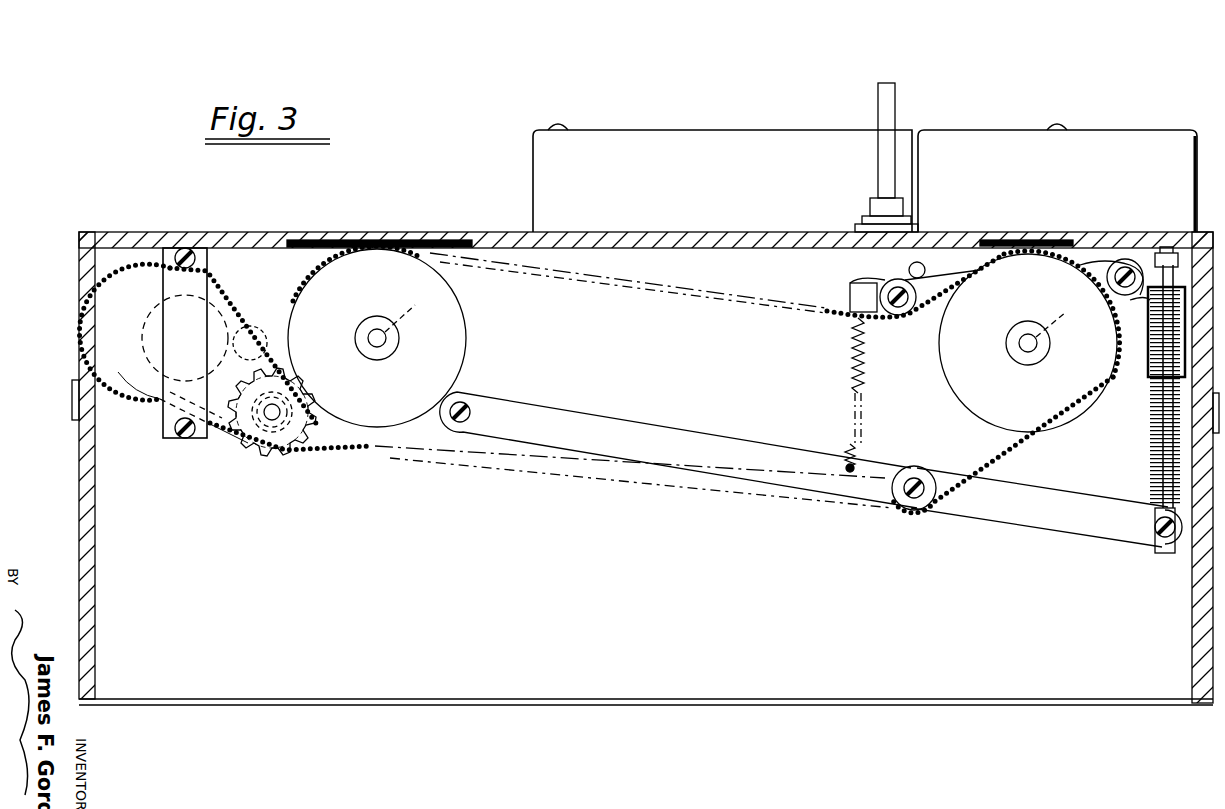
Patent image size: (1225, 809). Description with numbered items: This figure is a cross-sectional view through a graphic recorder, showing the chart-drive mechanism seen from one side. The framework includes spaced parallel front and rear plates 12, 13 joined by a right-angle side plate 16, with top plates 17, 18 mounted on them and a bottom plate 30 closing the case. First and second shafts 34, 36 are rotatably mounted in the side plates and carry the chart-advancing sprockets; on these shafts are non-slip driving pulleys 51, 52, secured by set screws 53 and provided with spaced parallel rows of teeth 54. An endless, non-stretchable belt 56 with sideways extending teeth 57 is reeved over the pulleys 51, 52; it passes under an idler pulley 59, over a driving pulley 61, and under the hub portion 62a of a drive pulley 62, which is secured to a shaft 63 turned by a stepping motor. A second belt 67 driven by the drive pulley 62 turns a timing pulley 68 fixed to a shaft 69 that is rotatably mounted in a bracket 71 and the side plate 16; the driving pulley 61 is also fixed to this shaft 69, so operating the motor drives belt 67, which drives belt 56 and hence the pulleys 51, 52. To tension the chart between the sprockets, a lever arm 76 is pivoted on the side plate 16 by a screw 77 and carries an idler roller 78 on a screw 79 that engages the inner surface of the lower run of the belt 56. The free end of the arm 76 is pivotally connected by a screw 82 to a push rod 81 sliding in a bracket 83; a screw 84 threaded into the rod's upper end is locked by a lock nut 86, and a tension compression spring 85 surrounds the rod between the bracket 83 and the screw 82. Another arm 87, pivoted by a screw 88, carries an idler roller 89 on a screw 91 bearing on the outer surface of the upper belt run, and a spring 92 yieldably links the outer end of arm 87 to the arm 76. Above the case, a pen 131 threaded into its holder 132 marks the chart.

The front plate 12 is at (79, 462).
The rear plate 13 is at (1212, 700).
The side plate 16 is at (540, 580).
The top plate 17 is at (1172, 248).
The top plate 18 is at (500, 242).
The bottom plate 30 is at (734, 706).
The first shaft 34 is at (1026, 350).
The second shaft 36 is at (380, 348).
The pulley 51 is at (1011, 343).
The pulley 52 is at (408, 338).
The set screw 53 is at (736, 310).
The teeth 54 is at (303, 287).
The belt 56 is at (162, 408).
The teeth 57 is at (991, 466).
The idler pulley 59 is at (253, 328).
The driving pulley 61 is at (150, 282).
The drive pulley 62 is at (267, 430).
The hub portion 62a is at (285, 456).
The shaft 63 is at (272, 421).
The belt 67 is at (220, 432).
The timing pulley 68 is at (140, 380).
The shaft 69 is at (186, 320).
The bracket 71 is at (167, 359).
The lever arm 76 is at (722, 450).
The screw 77 is at (470, 407).
The idler roller 78 is at (912, 465).
The screw 79 is at (916, 476).
The push rod 81 is at (1166, 554).
The screw 82 is at (1158, 527).
The bracket 83 is at (1145, 304).
The screw 84 is at (1178, 250).
The tension compression spring 85 is at (1149, 456).
The lock nut 86 is at (1128, 300).
The arm 87 is at (870, 289).
The screw 88 is at (1138, 260).
The idler roller 89 is at (900, 272).
The screw 91 is at (855, 290).
The spring 92 is at (854, 355).
The pen 131 is at (866, 187).
The holder 132 is at (865, 225).